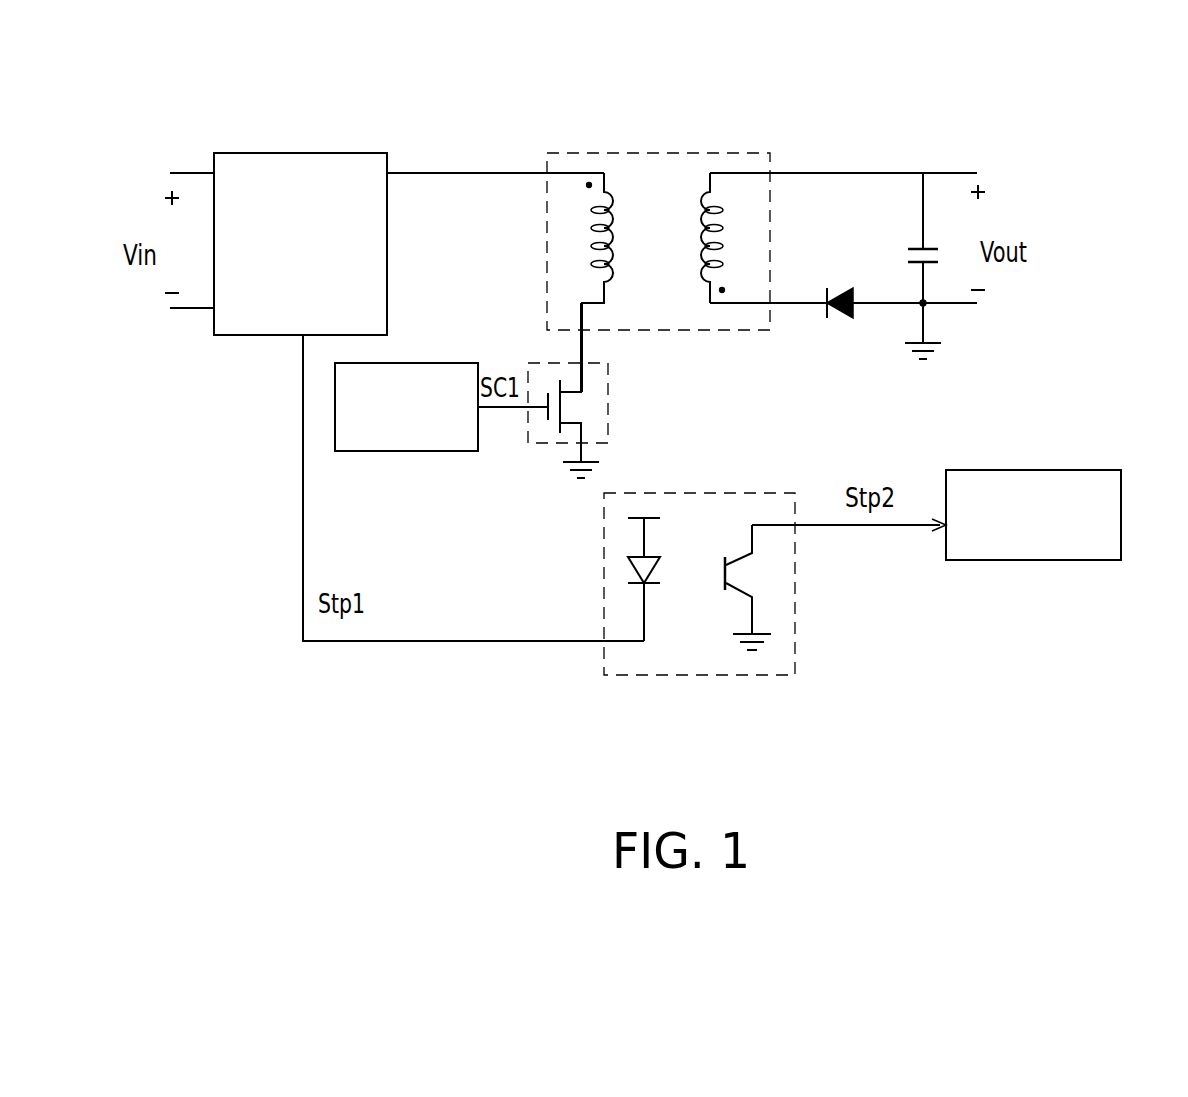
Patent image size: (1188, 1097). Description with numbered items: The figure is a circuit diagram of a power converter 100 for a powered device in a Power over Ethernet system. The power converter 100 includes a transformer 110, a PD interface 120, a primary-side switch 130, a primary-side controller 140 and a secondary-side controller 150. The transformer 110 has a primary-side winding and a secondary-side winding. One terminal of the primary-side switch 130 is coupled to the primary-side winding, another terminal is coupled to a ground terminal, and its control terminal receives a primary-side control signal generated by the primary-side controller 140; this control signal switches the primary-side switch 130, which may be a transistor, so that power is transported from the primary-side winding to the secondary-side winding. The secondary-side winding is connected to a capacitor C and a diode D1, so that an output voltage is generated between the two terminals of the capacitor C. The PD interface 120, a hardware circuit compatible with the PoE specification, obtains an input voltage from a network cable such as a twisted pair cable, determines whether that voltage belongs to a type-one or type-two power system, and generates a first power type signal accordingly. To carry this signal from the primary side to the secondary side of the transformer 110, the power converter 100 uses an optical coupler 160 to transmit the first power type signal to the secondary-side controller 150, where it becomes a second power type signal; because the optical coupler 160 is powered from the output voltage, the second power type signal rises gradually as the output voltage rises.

The power converter 100 is at (1165, 778).
The transformer 110 is at (638, 152).
The PD interface 120 is at (312, 153).
The primary-side switch 130 is at (611, 395).
The primary-side controller 140 is at (445, 363).
The secondary-side controller 150 is at (992, 470).
The optical coupler 160 is at (796, 605).
The capacitor C is at (917, 248).
The diode D1 is at (848, 288).